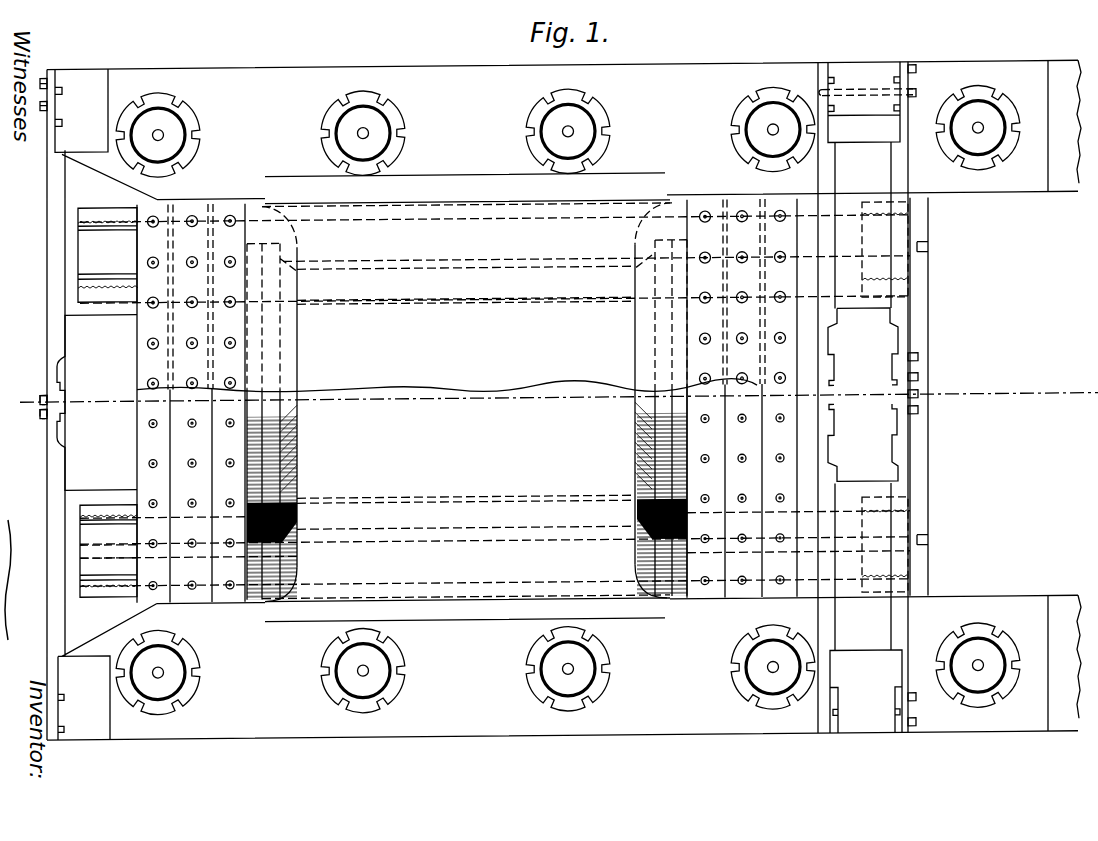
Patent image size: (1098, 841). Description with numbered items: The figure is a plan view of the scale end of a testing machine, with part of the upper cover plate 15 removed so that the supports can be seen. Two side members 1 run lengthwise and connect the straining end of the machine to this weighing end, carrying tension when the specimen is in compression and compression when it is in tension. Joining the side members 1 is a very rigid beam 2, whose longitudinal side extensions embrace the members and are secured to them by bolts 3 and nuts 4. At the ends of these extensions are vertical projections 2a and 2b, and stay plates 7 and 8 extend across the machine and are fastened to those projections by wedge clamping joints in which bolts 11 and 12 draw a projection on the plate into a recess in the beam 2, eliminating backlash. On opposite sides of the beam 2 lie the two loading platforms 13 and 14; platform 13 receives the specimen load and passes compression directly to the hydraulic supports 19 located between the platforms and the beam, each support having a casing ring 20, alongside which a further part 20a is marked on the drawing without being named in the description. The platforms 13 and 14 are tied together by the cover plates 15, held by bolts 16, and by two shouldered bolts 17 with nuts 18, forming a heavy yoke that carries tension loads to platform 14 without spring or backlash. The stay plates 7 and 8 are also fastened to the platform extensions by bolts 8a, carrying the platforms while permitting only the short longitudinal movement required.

The side members 1 is at (1075, 64).
The beam 2 is at (436, 753).
The vertical projection 2a is at (840, 67).
The vertical projection 2b is at (76, 68).
The bolts 3 is at (596, 653).
The nuts 4 is at (606, 694).
The stay plates 7 is at (838, 182).
The stay plate 8 is at (47, 268).
The bolts 8a is at (41, 393).
The bolt 11 is at (43, 74).
The bolt 12 is at (41, 107).
The loading platform 13 is at (864, 483).
The loading platform 14 is at (78, 490).
The cover plates 15 is at (430, 393).
The bolts 16 is at (188, 384).
The shouldered bolts 17 is at (665, 600).
The nuts 18 is at (125, 598).
The hydraulic supports 19 is at (298, 463).
The casing ring 20 is at (919, 366).
The clamp 20a is at (916, 362).